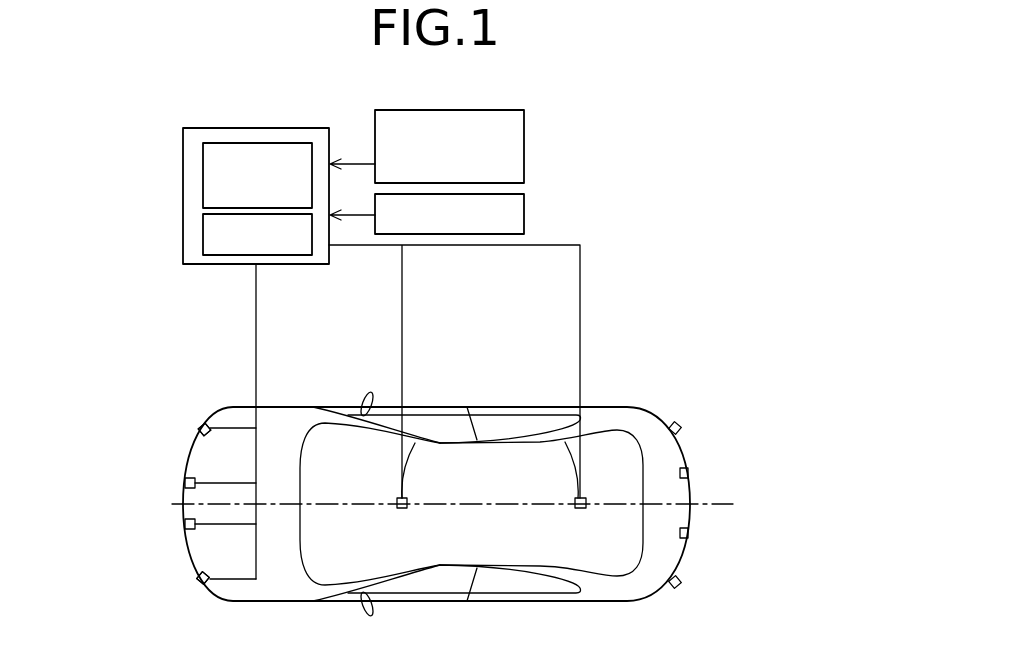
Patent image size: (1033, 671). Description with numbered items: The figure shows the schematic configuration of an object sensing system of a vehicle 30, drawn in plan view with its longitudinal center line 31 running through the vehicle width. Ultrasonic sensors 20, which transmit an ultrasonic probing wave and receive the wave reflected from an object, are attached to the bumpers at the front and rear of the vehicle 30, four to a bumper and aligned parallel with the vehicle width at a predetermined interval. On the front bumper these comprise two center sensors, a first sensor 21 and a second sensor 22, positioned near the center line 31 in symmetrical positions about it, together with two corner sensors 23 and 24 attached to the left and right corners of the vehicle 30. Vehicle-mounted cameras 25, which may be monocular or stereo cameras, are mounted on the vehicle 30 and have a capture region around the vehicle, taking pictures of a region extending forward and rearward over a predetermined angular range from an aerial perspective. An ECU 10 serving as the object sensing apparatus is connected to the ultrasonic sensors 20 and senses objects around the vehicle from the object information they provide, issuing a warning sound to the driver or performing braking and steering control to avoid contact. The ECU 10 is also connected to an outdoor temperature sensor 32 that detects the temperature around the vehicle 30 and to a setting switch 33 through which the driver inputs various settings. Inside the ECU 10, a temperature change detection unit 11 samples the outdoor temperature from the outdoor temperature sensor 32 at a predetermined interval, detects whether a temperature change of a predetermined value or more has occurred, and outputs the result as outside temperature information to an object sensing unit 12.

The ECU 10 is at (286, 128).
The temperature change detection unit 11 is at (203, 161).
The object sensing unit 12 is at (203, 231).
The ultrasonic sensors 20 is at (159, 376).
The first sensor 21 is at (185, 483).
The second sensor 22 is at (185, 527).
The corner sensor 23 is at (205, 424).
The corner sensor 24 is at (203, 585).
The vehicle-mounted cameras 25 is at (402, 508).
The vehicle 30 is at (500, 406).
The center line 31 is at (471, 506).
The outdoor temperature sensor 32 is at (524, 168).
The setting switch 33 is at (524, 216).